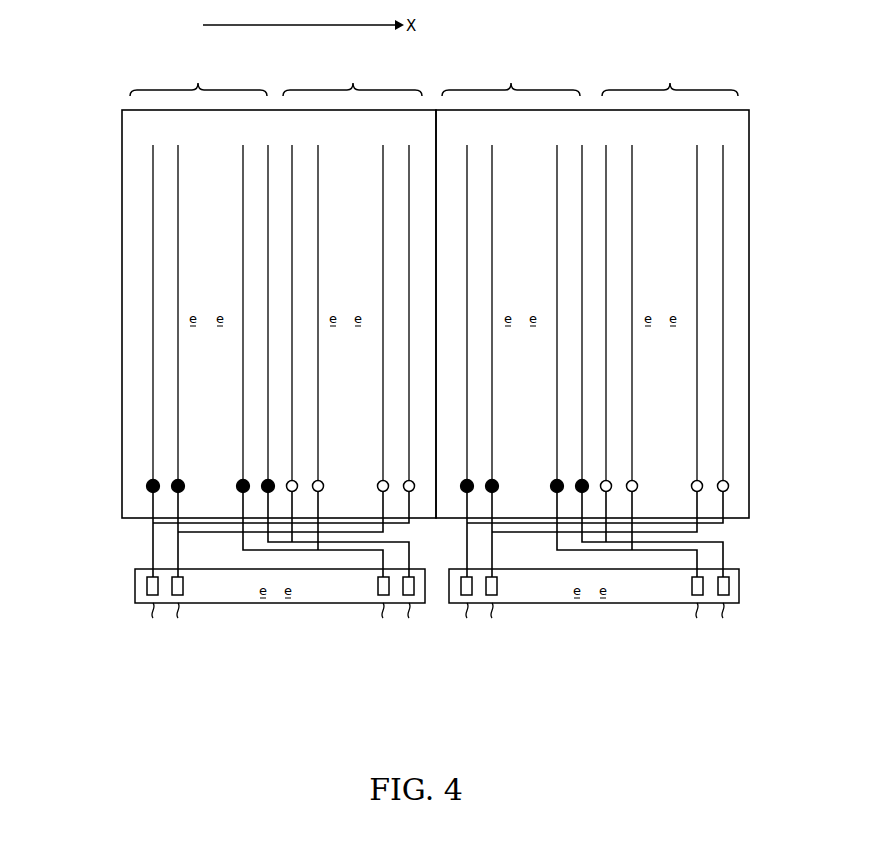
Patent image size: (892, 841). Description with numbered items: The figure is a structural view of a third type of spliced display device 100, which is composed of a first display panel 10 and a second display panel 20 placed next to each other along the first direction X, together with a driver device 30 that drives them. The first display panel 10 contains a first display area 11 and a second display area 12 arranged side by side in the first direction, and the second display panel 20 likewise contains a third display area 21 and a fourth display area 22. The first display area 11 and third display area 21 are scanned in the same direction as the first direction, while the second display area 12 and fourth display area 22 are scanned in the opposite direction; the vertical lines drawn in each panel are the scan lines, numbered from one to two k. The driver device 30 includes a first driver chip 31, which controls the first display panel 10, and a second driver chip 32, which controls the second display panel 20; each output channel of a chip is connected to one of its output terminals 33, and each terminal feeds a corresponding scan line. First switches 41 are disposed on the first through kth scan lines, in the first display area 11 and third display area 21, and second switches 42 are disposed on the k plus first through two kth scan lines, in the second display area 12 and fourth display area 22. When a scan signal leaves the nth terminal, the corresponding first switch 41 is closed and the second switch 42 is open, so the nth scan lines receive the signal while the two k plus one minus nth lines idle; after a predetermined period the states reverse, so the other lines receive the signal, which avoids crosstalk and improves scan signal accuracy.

The spliced display device 100 is at (152, 44).
The first display panel 10 is at (122, 313).
The second display panel 20 is at (749, 314).
The first display area 11 is at (200, 272).
The second display area 12 is at (352, 272).
The third display area 21 is at (513, 272).
The fourth display area 22 is at (667, 272).
The driver device 30 is at (520, 673).
The first driver chip 31 is at (352, 605).
The second driver chip 32 is at (523, 605).
The output terminals 33 is at (147, 587).
The first switches 41 is at (146, 486).
The second switches 42 is at (729, 486).